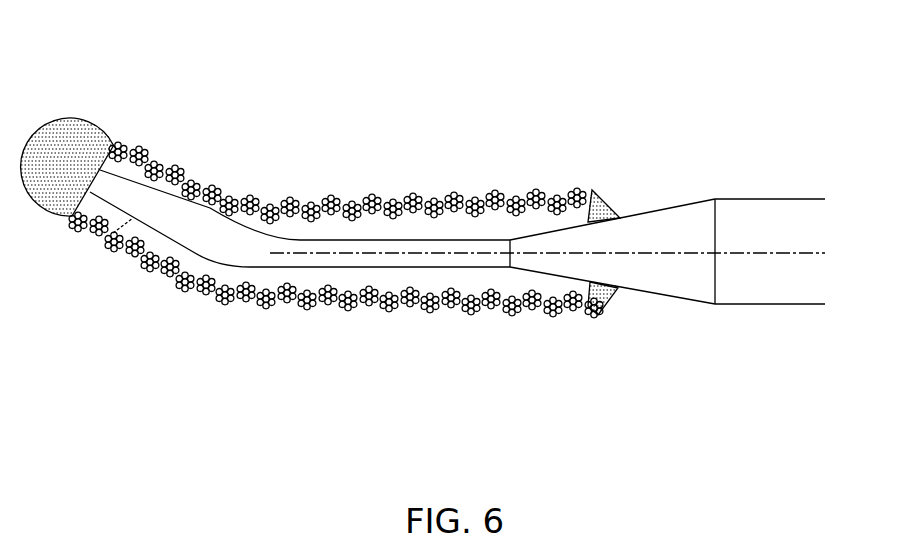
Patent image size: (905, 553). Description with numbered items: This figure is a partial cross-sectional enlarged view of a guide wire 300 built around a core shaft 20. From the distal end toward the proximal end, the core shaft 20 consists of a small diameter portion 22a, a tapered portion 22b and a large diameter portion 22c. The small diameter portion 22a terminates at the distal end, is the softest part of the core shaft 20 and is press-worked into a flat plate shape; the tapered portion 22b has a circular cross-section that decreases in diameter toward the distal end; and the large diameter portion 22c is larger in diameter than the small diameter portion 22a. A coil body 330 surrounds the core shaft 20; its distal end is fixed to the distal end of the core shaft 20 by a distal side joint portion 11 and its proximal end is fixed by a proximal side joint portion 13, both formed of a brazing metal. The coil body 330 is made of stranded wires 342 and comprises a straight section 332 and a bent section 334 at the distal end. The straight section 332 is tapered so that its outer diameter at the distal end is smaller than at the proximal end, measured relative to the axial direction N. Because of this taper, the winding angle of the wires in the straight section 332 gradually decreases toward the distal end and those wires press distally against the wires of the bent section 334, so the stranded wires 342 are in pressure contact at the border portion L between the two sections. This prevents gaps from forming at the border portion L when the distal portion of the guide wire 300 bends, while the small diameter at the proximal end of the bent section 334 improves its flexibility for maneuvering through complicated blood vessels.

The distal side joint portion 11 is at (62, 113).
The core shaft 20 is at (437, 261).
The small diameter portion 22a is at (95, 245).
The tapered portion 22b is at (669, 297).
The large diameter portion 22c is at (746, 199).
The proximal side joint portion 13 is at (606, 190).
The guide wire 300 is at (497, 107).
The coil body 330 is at (336, 216).
The straight section 332 is at (569, 181).
The bent section 334 is at (279, 200).
The stranded wires 342 is at (183, 280).
The axial direction N is at (563, 252).
The border portion L is at (187, 298).